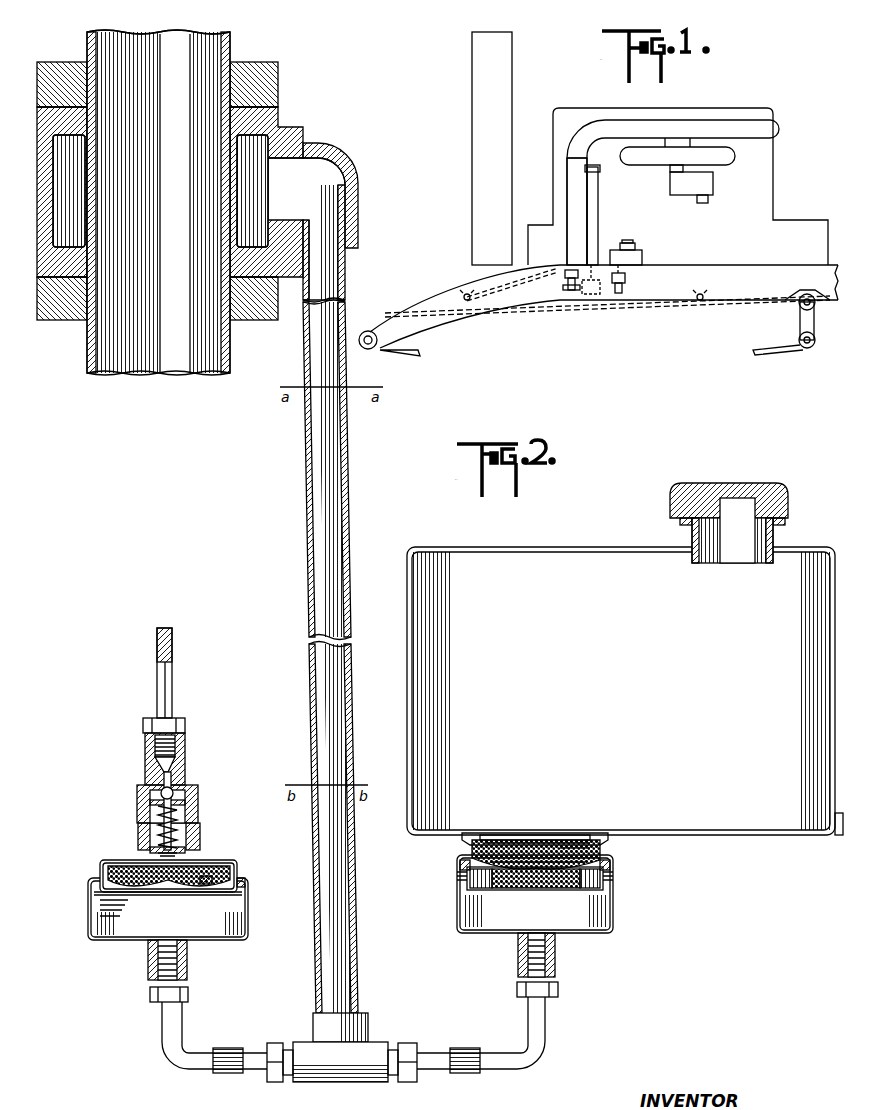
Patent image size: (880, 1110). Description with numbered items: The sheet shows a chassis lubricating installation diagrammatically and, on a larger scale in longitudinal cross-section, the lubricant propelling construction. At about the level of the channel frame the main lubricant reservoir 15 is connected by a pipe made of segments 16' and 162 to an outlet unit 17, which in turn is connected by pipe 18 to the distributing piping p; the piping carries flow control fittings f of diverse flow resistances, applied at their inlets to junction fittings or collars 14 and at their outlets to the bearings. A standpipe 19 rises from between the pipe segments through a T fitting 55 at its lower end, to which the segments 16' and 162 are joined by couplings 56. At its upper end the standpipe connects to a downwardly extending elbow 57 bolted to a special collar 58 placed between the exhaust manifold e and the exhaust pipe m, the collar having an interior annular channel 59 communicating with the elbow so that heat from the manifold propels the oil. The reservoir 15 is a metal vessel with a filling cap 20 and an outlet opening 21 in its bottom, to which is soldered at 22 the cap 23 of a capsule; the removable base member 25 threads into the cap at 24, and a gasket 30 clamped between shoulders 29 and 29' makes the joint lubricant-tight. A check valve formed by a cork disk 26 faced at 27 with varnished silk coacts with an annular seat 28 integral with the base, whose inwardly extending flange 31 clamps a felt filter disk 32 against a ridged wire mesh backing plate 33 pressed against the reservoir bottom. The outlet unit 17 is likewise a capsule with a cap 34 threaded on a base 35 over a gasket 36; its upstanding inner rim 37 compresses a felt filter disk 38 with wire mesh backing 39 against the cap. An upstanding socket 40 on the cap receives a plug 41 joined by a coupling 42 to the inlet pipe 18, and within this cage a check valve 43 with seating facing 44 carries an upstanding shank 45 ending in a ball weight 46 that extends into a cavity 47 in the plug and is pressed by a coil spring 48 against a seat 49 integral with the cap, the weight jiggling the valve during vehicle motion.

In FIG. 1, the exhaust manifold e is at (677, 130).
In FIG. 2, the exhaust manifold e is at (231, 38).
In FIG. 1, the exhaust pipe m is at (575, 195).
In FIG. 2, the exhaust pipe m is at (222, 368).
In FIG. 1, the flow control fittings f is at (718, 298).
In FIG. 1, the distributing piping p is at (603, 300).
In FIG. 1, the junction fittings or collars 14 is at (467, 300).
In FIG. 1, the main lubricant reservoir 15 is at (643, 255).
In FIG. 2, the main lubricant reservoir 15 is at (742, 825).
In FIG. 1, the connecting pipe segment 16' is at (631, 299).
In FIG. 2, the connecting pipe segment 16' is at (487, 1014).
In FIG. 1, the connecting pipe segment 162 is at (580, 299).
In FIG. 2, the connecting pipe segment 162 is at (214, 1074).
In FIG. 1, the outlet unit 17 is at (562, 283).
In FIG. 2, the outlet unit 17 is at (207, 993).
In FIG. 1, the pipe (inlet of distributing piping) 18 is at (512, 274).
In FIG. 2, the pipe (inlet of distributing piping) 18 is at (172, 673).
In FIG. 1, the standpipe 19 is at (599, 213).
In FIG. 2, the standpipe 19 is at (303, 521).
In FIG. 2, the filling cap 20 is at (736, 510).
In FIG. 2, the outlet opening 21 is at (500, 835).
In FIG. 2, the soldered joint 22 is at (456, 841).
In FIG. 2, the capsule cap 23 is at (612, 852).
In FIG. 2, the threaded connection 24 is at (615, 881).
In FIG. 2, the removable base member 25 is at (614, 922).
In FIG. 2, the cork disk 26 is at (497, 891).
In FIG. 2, the varnished silk facing 27 is at (548, 860).
In FIG. 2, the annular seat 28 is at (510, 891).
In FIG. 2, the shoulder of base 29 is at (513, 885).
In FIG. 2, the shoulder of cap 29' is at (443, 872).
In FIG. 2, the gasket 30 is at (615, 864).
In FIG. 2, the inwardly extending flange 31 is at (572, 891).
In FIG. 2, the felt filter disk 32 is at (571, 845).
In FIG. 2, the ridged wire mesh backing plate 33 is at (528, 841).
In FIG. 2, the cap 34 is at (245, 883).
In FIG. 2, the base 35 is at (95, 937).
In FIG. 2, the gasket 36 is at (246, 893).
In FIG. 2, the upstanding inner rim 37 is at (132, 898).
In FIG. 2, the filter disk 38 is at (212, 862).
In FIG. 2, the ridged backing 39 is at (125, 863).
In FIG. 2, the upstanding socket 40 is at (200, 827).
In FIG. 2, the plug 41 is at (187, 779).
In FIG. 2, the coupling 42 is at (185, 762).
In FIG. 2, the check valve 43 is at (163, 880).
In FIG. 2, the seating facing 44 is at (178, 880).
In FIG. 2, the upstanding shank 45 is at (198, 810).
In FIG. 2, the ball weight 46 is at (140, 793).
In FIG. 2, the cavity 47 is at (160, 789).
In FIG. 2, the coil spring 48 is at (158, 827).
In FIG. 2, the seat 49 is at (206, 884).
In FIG. 2, the T fitting 55 is at (343, 1078).
In FIG. 2, the couplings 56 is at (278, 1083).
In FIG. 2, the elbow 57 is at (359, 190).
In FIG. 2, the special collar 58 is at (283, 118).
In FIG. 2, the annular channel 59 is at (69, 252).